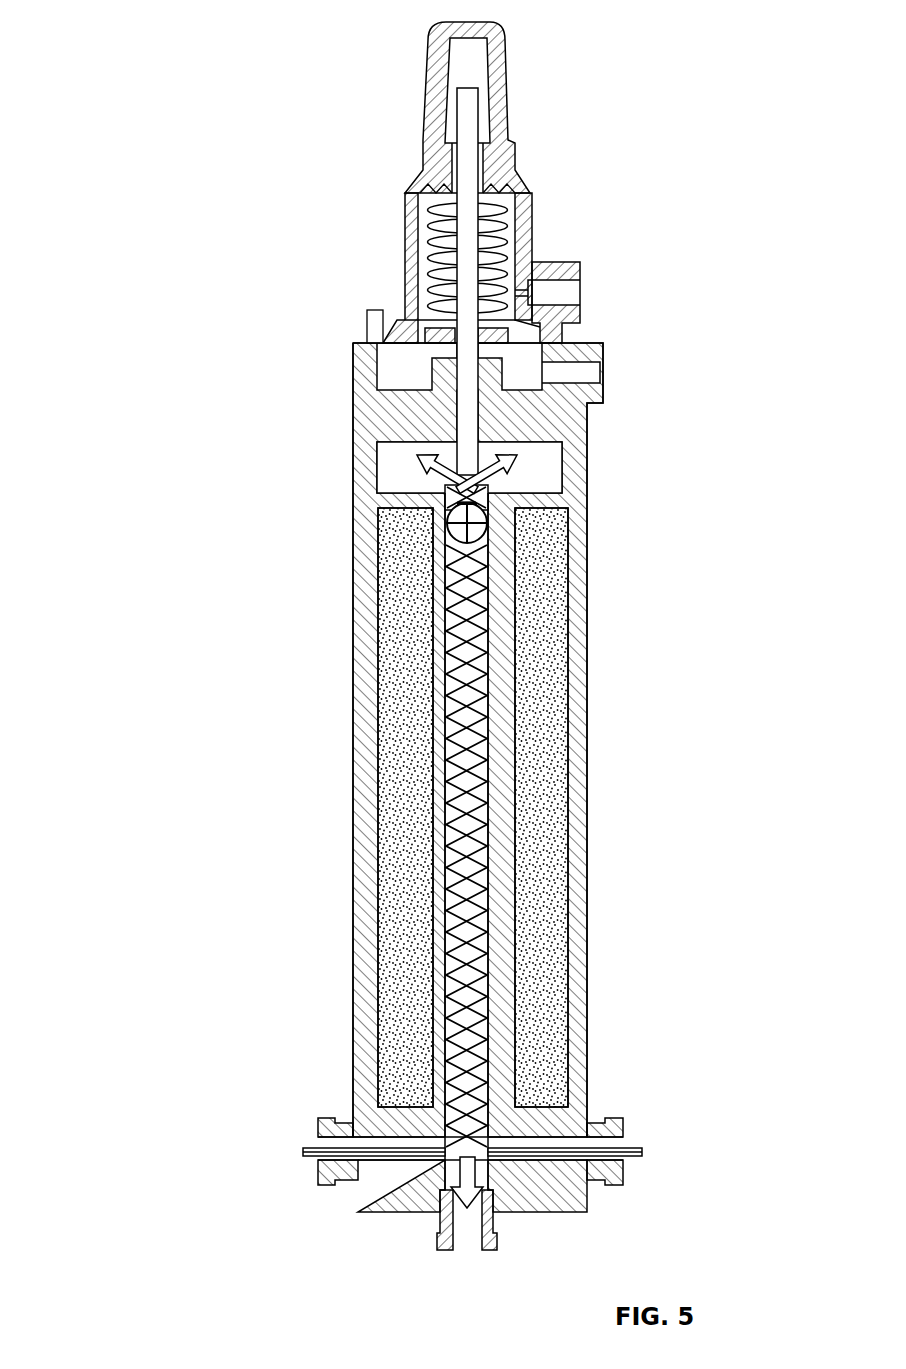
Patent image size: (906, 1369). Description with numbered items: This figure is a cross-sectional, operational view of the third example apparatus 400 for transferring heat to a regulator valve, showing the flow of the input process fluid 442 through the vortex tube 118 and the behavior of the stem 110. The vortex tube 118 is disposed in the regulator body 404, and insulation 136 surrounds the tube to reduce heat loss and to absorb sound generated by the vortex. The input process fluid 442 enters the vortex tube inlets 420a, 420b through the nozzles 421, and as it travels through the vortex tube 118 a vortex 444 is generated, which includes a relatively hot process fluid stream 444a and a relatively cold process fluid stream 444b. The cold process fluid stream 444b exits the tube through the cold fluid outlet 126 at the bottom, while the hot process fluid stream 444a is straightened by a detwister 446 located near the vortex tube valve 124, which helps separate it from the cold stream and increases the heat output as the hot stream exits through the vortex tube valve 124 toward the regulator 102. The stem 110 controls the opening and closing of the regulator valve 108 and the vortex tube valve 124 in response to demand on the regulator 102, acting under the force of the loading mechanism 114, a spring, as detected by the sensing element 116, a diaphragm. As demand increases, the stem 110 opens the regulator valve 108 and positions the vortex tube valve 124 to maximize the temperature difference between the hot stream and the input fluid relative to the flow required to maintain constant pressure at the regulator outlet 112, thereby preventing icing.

The apparatus 400 is at (138, 48).
The regulator 102 is at (425, 173).
The regulator body 404 is at (407, 215).
The loading mechanism 114 is at (512, 245).
The sensing element 116 is at (428, 338).
The stem 110 is at (478, 420).
The regulator outlet 112 is at (603, 372).
The vortex tube valve 124 is at (480, 462).
The regulator valve 108 is at (460, 365).
The hot process fluid stream 444a is at (475, 478).
The detwister 446 is at (447, 540).
The vortex 444 is at (490, 603).
The insulation 136 is at (393, 710).
The vortex tube 118 is at (490, 902).
The vortex tube inlet 420a is at (318, 1132).
The nozzles 421 is at (325, 1160).
The input process fluid 442 is at (642, 1152).
The vortex tube inlet 420b is at (623, 1172).
The cold process fluid stream 444b is at (452, 1197).
The cold fluid outlet 126 is at (463, 1232).